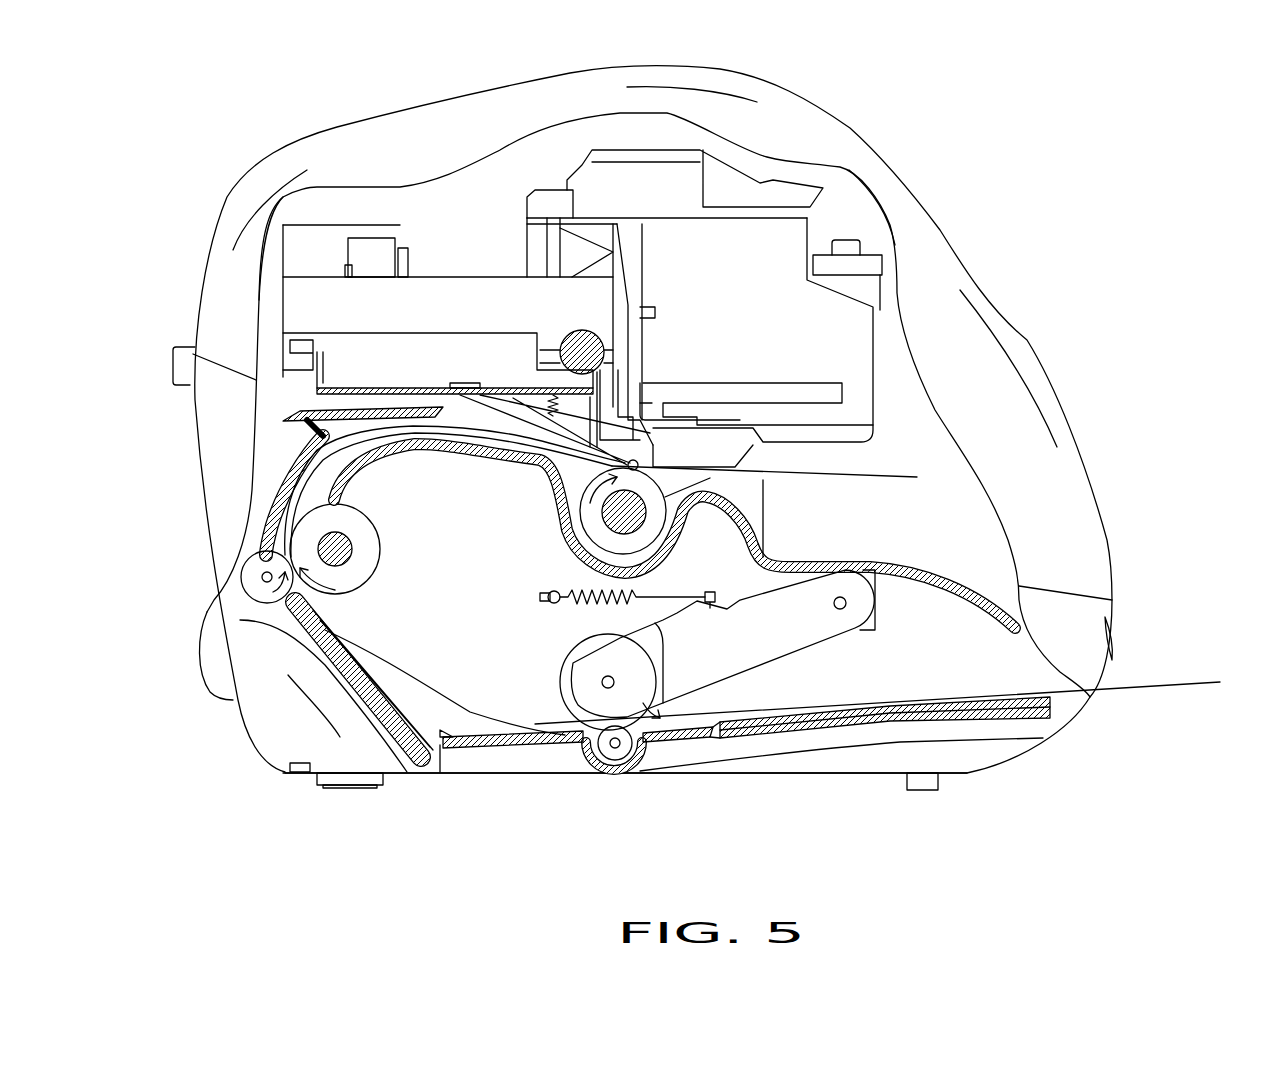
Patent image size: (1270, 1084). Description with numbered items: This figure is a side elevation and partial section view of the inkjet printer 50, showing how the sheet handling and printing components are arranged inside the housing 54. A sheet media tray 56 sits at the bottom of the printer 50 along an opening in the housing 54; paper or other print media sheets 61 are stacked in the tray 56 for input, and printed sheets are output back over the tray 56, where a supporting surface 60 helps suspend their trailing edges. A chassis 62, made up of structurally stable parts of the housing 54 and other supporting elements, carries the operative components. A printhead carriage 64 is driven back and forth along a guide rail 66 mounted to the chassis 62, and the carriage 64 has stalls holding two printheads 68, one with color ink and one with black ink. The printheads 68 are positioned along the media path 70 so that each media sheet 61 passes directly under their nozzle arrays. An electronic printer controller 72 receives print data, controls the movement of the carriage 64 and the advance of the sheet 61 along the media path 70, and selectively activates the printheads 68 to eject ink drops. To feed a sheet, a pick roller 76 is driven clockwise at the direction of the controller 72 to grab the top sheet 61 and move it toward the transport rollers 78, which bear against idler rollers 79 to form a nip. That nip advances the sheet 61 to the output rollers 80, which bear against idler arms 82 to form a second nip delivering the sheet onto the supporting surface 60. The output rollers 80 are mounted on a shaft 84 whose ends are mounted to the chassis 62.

The inkjet printer 50 is at (1083, 140).
The housing 54 is at (947, 247).
The sheet media tray 56 is at (1090, 702).
The supporting surface 60 is at (917, 560).
The print media sheets 61 is at (400, 670).
The chassis 62 is at (370, 428).
The printhead carriage 64 is at (267, 286).
The guide rail 66 is at (568, 337).
The printheads 68 is at (868, 300).
The media path 70 is at (493, 430).
The electronic printer controller 72 is at (418, 253).
The pick roller 76 is at (580, 663).
The transport rollers 78 is at (373, 548).
The idler rollers 79 is at (248, 588).
The output rollers 80 is at (647, 537).
The idler arms 82 is at (583, 443).
The output rollers shaft 84 is at (617, 522).